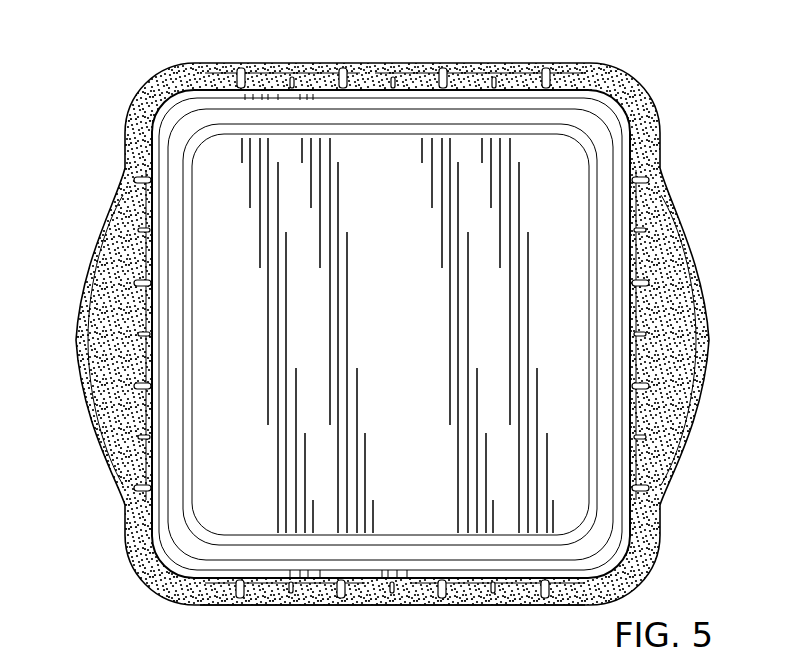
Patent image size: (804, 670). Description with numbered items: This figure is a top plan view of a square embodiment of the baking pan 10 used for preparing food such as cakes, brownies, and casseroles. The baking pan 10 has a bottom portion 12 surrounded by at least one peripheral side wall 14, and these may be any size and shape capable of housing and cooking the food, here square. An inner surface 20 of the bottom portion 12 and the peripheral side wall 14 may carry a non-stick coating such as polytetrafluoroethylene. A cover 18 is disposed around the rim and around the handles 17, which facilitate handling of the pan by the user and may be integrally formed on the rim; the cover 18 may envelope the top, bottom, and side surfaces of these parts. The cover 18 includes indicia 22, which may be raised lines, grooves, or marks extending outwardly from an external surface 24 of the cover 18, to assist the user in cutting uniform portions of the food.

The baking pan 10 is at (85, 78).
The bottom portion 12 is at (215, 167).
The peripheral side wall 14 is at (320, 117).
The handle 17 is at (77, 337).
The cover 18 is at (491, 604).
The inner surface 20 is at (234, 497).
The indicia 22 is at (441, 64).
The external surface 24 is at (655, 140).